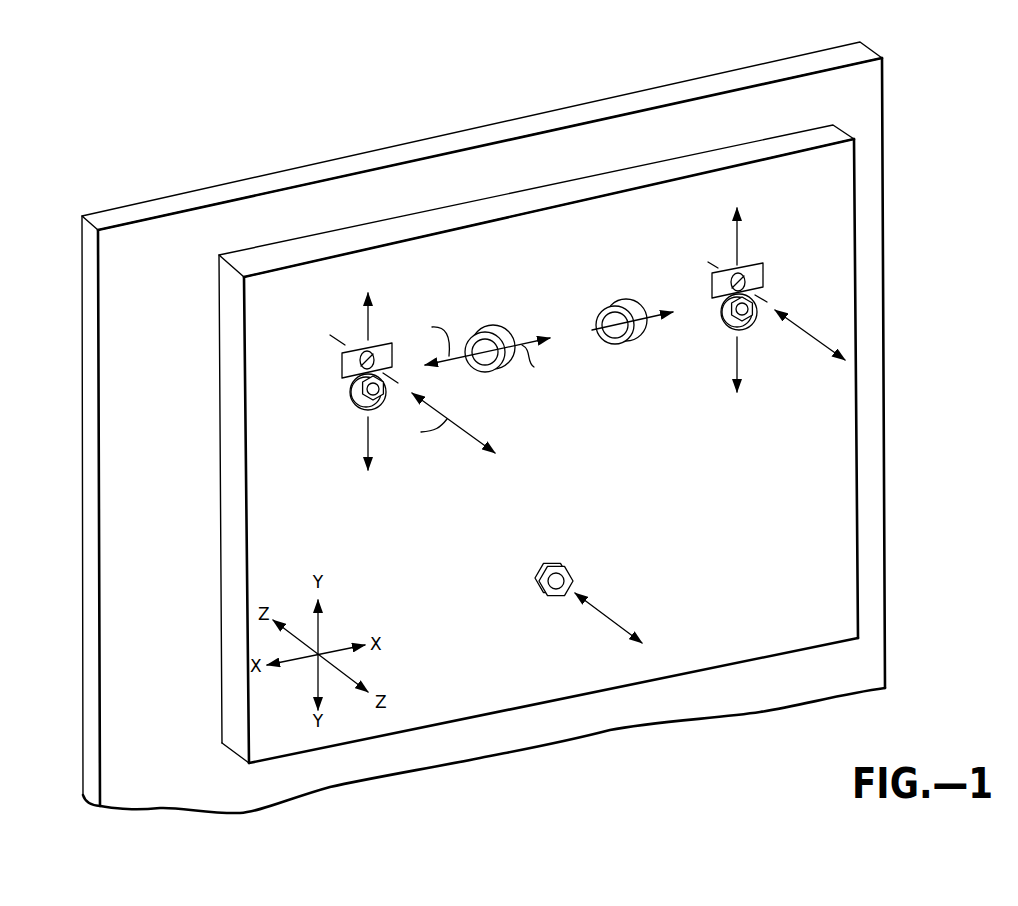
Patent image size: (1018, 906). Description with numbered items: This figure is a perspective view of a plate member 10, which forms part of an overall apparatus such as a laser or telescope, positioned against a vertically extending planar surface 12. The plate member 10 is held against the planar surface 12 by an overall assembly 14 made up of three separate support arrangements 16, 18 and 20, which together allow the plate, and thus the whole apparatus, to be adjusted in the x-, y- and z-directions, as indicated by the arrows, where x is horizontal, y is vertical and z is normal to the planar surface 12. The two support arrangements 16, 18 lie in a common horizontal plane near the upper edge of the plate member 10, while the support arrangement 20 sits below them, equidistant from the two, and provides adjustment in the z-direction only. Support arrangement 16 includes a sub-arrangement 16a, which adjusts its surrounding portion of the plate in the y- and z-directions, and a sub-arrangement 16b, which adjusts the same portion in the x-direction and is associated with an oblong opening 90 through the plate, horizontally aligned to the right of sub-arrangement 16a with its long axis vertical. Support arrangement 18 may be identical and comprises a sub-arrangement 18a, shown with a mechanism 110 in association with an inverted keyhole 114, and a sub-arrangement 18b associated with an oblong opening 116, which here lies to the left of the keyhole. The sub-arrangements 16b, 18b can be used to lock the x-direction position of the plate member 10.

The plate member 10 is at (583, 683).
The vertically extending planar surface 12 is at (137, 228).
The overall assembly 14 is at (808, 508).
The support arrangement 16 is at (440, 282).
The sub-arrangement 16a is at (345, 404).
The sub-arrangement 16b is at (497, 319).
The opening 90 is at (487, 371).
The support arrangement 18 is at (771, 225).
The sub-arrangement 18a is at (718, 324).
The sub-arrangement 18b is at (615, 292).
The inverted keyhole 114 is at (719, 307).
The mechanism 110 is at (730, 332).
The oblong opening 116 is at (615, 345).
The support arrangement 20 is at (571, 556).